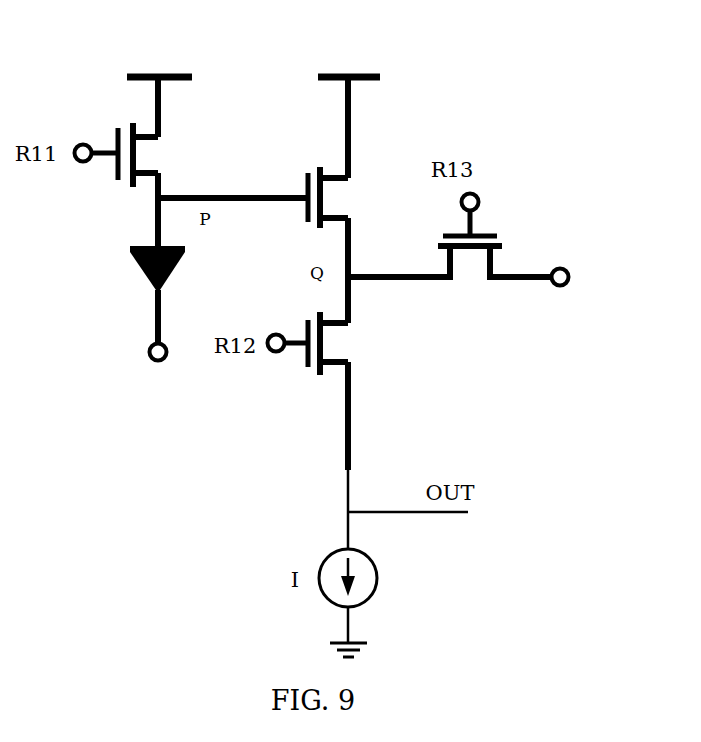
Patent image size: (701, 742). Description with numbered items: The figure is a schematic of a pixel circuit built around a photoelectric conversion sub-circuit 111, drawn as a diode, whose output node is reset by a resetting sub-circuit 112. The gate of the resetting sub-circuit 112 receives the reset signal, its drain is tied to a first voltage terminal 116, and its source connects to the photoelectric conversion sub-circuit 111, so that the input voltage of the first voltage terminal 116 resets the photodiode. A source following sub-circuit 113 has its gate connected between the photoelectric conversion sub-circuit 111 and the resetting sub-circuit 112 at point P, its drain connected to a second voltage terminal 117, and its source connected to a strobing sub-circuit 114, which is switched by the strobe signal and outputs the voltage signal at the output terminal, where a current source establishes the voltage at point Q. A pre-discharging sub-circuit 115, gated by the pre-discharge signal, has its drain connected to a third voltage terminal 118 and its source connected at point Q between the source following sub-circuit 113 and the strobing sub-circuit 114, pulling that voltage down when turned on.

The photoelectric conversion sub-circuit 111 is at (125, 287).
The resetting sub-circuit 112 is at (113, 190).
The source following sub-circuit 113 is at (305, 213).
The strobing sub-circuit 114 is at (305, 367).
The pre-discharging sub-circuit 115 is at (502, 247).
The first voltage terminal 116 is at (157, 72).
The second voltage terminal 117 is at (340, 70).
The third voltage terminal 118 is at (568, 287).